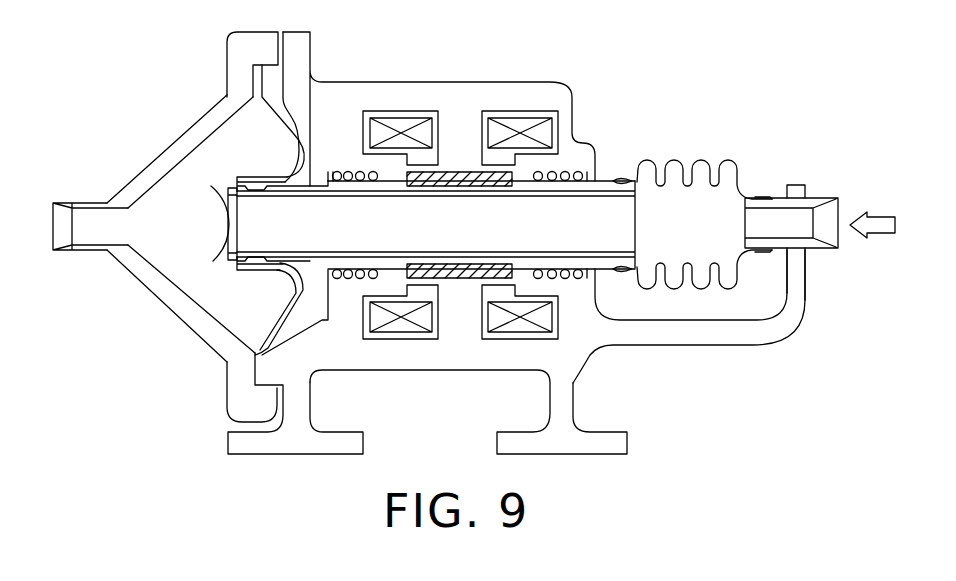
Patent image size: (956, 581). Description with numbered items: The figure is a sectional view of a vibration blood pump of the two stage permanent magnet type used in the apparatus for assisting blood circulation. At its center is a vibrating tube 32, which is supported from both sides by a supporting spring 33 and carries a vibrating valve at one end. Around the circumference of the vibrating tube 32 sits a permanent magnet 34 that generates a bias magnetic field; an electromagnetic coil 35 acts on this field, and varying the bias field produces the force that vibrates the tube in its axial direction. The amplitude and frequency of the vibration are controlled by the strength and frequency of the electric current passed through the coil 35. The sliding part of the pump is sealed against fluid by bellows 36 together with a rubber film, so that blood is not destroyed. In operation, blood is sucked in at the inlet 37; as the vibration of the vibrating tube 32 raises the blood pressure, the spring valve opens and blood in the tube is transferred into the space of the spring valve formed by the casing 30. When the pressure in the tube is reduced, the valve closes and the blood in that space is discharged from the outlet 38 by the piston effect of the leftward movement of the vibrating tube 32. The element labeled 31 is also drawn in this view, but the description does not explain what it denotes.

The casing 30 is at (138, 172).
The impeller disc 31 is at (218, 185).
The vibrating tube 32 is at (308, 178).
The supporting spring 33 is at (375, 172).
The permanent magnet 34 is at (455, 183).
The electromagnetic coil 35 is at (522, 123).
The bellows 36 is at (675, 160).
The inlet 37 is at (840, 213).
The outlet 38 is at (53, 208).